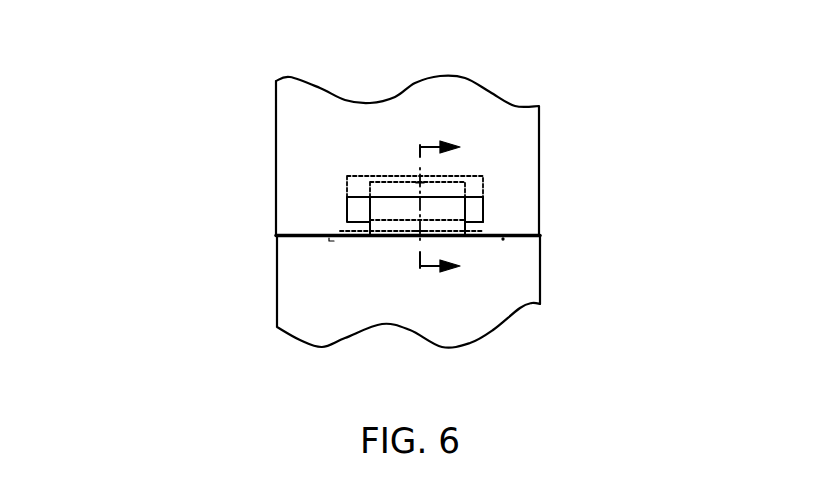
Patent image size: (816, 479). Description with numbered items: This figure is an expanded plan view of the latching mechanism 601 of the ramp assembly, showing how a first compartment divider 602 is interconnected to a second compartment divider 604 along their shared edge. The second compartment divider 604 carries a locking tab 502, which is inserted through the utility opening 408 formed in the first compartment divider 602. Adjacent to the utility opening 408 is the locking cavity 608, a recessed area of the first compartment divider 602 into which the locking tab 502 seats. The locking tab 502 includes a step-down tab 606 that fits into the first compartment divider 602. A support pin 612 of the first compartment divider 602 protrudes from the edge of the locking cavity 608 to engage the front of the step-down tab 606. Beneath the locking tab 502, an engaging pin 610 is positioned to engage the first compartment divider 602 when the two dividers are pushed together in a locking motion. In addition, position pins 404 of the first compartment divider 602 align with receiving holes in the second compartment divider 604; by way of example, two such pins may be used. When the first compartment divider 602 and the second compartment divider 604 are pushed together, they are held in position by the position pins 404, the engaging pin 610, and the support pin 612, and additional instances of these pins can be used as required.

The latching mechanism 601 is at (126, 30).
The first compartment divider 602 is at (328, 148).
The second compartment divider 604 is at (332, 310).
The position pin 404 is at (500, 238).
The locking tab 502 is at (385, 212).
The utility opening 408 is at (475, 212).
The locking cavity 608 is at (483, 176).
The step-down tab 606 is at (388, 192).
The support pin 612 is at (420, 183).
The engaging pin 610 is at (340, 231).